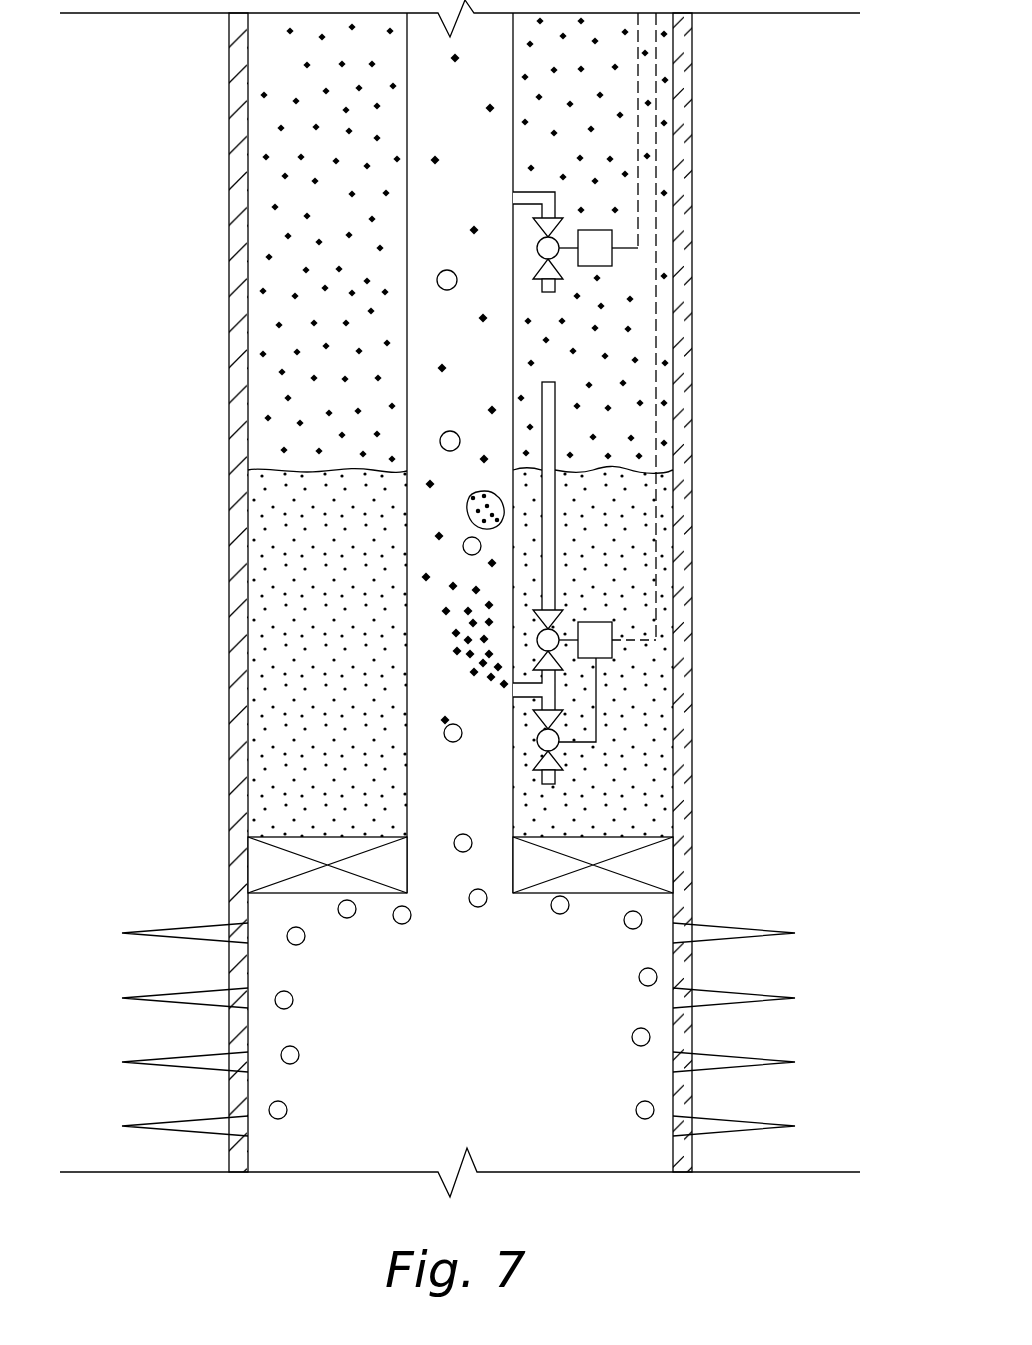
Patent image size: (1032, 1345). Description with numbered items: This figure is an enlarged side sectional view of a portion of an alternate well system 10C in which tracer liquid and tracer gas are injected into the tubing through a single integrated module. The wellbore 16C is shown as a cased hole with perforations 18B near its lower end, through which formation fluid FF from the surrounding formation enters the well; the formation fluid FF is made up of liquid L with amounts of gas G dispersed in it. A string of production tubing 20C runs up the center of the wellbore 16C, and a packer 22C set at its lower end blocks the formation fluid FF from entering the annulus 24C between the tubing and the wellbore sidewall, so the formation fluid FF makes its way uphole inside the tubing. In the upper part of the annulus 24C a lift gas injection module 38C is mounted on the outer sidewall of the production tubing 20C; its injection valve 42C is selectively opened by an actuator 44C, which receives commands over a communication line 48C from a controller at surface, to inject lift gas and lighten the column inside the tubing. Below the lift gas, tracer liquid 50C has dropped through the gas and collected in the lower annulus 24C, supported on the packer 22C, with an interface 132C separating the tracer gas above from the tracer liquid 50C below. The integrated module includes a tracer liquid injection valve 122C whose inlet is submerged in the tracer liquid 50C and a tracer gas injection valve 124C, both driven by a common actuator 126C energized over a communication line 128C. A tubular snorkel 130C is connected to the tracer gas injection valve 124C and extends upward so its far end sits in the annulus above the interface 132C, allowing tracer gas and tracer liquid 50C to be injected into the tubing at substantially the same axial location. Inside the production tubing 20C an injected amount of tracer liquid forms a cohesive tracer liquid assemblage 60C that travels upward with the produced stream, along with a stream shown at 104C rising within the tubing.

The well system 10C is at (787, 82).
The wellbore 16C is at (248, 218).
The perforations 18B is at (162, 992).
The production tubing 20C is at (513, 162).
The packer 22C is at (270, 865).
The annulus 24C is at (280, 65).
The lift gas injection module 38C is at (621, 277).
The injection valve 42C is at (560, 267).
The actuator 44C is at (612, 258).
The communication line 48C is at (640, 213).
The tracer liquid 50C is at (268, 764).
The tracer liquid assemblage 60C is at (471, 505).
The sand stream in tubing 104C is at (455, 633).
The tracer liquid injection valve 122C is at (560, 765).
The tracer gas injection valve 124C is at (560, 618).
The common actuator 126C is at (612, 652).
The communication line 128C is at (656, 527).
The snorkel 130C is at (555, 432).
The interface 132C is at (265, 467).
The formation fluid FF is at (462, 1014).
The gas G is at (298, 1058).
The liquid L is at (565, 1078).